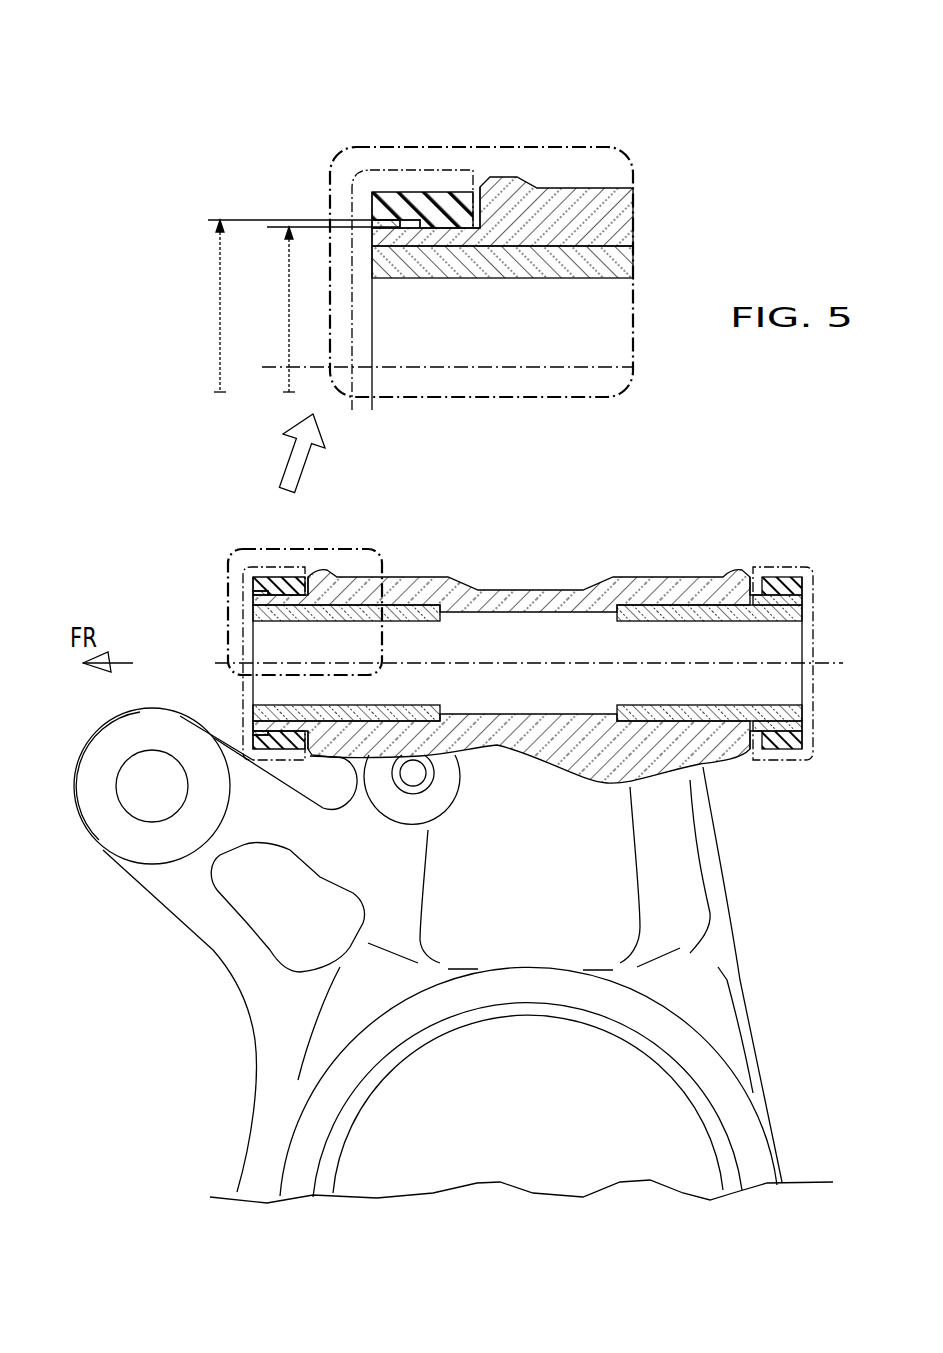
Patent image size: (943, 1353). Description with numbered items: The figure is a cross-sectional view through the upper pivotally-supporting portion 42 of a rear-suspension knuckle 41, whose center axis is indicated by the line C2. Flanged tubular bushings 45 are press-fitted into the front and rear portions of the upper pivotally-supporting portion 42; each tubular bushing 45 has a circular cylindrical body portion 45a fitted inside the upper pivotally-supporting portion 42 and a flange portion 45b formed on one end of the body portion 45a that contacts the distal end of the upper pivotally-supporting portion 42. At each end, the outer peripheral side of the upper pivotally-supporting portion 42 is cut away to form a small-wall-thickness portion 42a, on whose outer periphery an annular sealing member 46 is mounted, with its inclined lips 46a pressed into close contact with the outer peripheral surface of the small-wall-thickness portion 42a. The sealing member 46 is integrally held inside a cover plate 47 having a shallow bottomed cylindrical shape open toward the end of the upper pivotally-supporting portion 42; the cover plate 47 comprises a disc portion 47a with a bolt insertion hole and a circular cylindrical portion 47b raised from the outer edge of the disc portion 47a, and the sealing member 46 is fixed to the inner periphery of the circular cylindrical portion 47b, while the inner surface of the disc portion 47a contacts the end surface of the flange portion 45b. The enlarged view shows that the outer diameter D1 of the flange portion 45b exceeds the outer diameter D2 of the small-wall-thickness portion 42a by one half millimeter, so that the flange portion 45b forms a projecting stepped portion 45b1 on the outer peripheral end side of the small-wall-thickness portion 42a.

The knuckle 41 is at (750, 990).
The upper pivotally-supporting portion 42 is at (527, 443).
The small-wall-thickness portion 42a is at (293, 583).
The tubular bushing 45 is at (511, 439).
The body portion 45a is at (405, 608).
The flange portion 45b is at (511, 439).
The stepped portion 45b1 is at (377, 218).
The sealing member 46 is at (515, 426).
The lip 46a is at (432, 224).
The cover plate 47 is at (496, 414).
The disc portion 47a is at (357, 340).
The circular cylindrical portion 47b is at (430, 175).
The center axis C2 is at (792, 665).
The outer diameter of flange portion D1 is at (219, 300).
The outer diameter of small-wall-thickness portion D2 is at (287, 320).